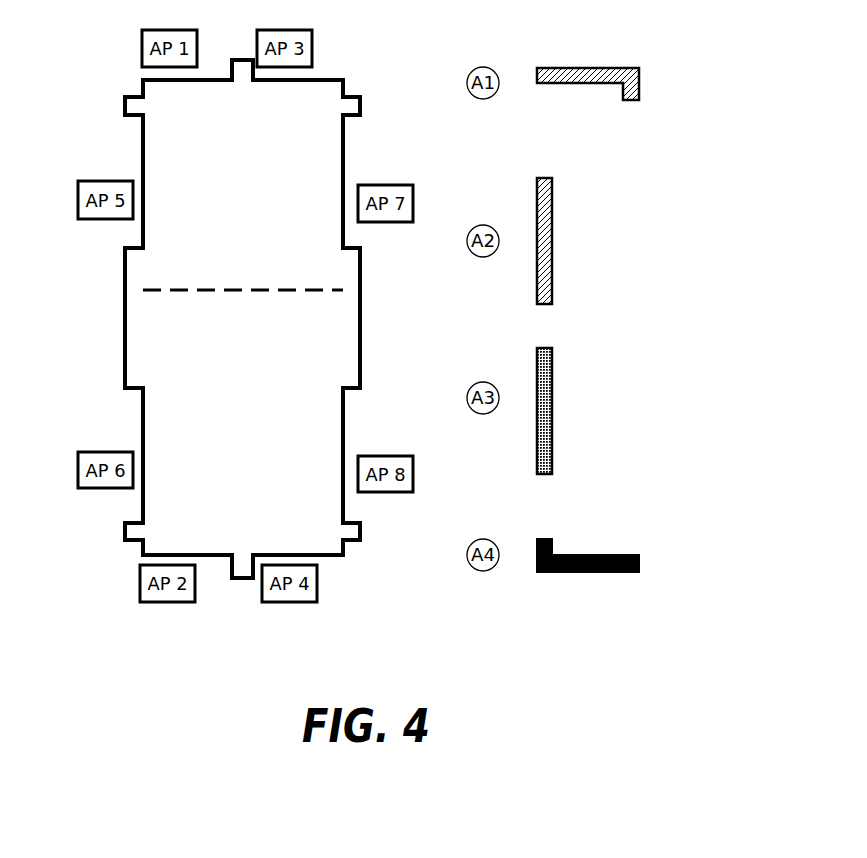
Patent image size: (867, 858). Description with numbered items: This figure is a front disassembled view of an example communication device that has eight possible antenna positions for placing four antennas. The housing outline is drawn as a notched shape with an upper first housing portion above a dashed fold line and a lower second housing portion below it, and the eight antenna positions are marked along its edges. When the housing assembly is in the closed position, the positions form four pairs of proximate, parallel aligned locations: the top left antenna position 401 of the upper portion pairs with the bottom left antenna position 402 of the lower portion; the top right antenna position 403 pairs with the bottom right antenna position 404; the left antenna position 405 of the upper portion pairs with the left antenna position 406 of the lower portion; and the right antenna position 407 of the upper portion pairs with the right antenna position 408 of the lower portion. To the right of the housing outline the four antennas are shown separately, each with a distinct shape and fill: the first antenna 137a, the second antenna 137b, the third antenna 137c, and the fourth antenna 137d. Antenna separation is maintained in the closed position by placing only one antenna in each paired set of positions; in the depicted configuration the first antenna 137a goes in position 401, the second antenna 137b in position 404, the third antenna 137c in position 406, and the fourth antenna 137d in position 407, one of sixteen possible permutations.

The top left antenna position 401 is at (200, 79).
The bottom left antenna position 402 is at (225, 560).
The top right antenna position 403 is at (308, 79).
The bottom right antenna position 404 is at (330, 560).
The left antenna position 405 is at (140, 150).
The left antenna position 406 is at (140, 420).
The right antenna position 407 is at (346, 158).
The right antenna position 408 is at (346, 430).
The first antenna 137a is at (637, 67).
The second antenna 137b is at (554, 240).
The third antenna 137c is at (554, 408).
The fourth antenna 137d is at (641, 565).